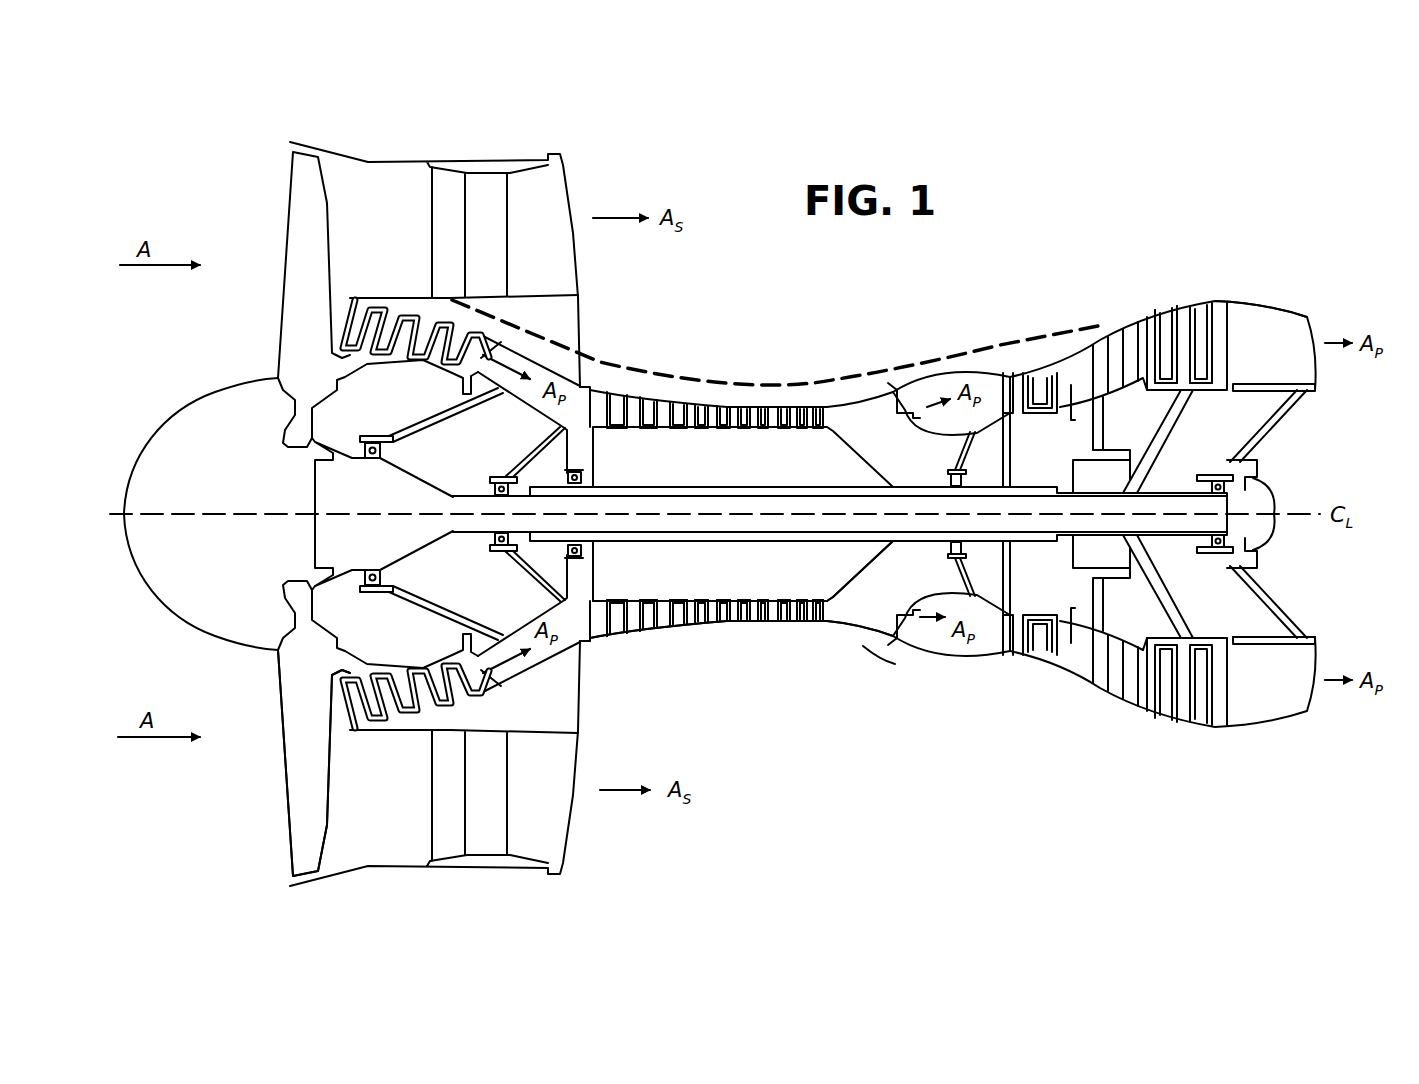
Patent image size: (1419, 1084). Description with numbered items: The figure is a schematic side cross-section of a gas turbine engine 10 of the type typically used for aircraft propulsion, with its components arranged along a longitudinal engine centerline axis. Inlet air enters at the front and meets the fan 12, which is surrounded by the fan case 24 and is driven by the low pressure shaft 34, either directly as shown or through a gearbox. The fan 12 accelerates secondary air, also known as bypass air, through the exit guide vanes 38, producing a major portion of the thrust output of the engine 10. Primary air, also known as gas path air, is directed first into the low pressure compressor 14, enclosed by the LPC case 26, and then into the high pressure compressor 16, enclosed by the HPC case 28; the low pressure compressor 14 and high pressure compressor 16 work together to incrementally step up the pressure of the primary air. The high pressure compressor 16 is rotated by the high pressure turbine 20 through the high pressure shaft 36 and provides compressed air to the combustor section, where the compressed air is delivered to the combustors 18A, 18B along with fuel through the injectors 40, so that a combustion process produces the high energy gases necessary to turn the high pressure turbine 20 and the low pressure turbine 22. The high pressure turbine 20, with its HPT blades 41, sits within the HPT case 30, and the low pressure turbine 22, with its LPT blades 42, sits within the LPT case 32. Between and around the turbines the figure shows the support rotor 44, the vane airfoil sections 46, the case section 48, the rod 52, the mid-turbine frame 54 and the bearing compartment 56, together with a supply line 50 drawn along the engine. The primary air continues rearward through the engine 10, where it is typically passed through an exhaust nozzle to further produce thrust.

The gas turbine engine 10 is at (1092, 220).
The fan 12 is at (285, 795).
The low pressure compressor 14 is at (420, 724).
The high pressure compressor 16 is at (763, 645).
The combustor 18A is at (937, 632).
The combustor 18B is at (987, 380).
The high pressure turbine 20 is at (1027, 674).
The low pressure turbine 22 is at (1148, 737).
The fan case 24 is at (400, 160).
The LPC case 26 is at (403, 298).
The HPC case 28 is at (733, 410).
The HPT case 30 is at (1068, 365).
The LPT case 32 is at (1223, 302).
The low pressure shaft 34 is at (812, 505).
The high pressure shaft 36 is at (867, 617).
The exit guide vanes 38 is at (500, 255).
The injectors 40 is at (897, 385).
The HPT blades 41 is at (1048, 658).
The LPT blades 42 is at (1153, 353).
The support rotor 44 is at (1153, 442).
The vane airfoil sections 46 is at (1170, 340).
The case section 48 is at (1180, 303).
The supply line 50 is at (866, 372).
The rod 52 is at (1110, 423).
The mid-turbine frame 54 is at (1077, 514).
The bearing compartment 56 is at (1070, 477).